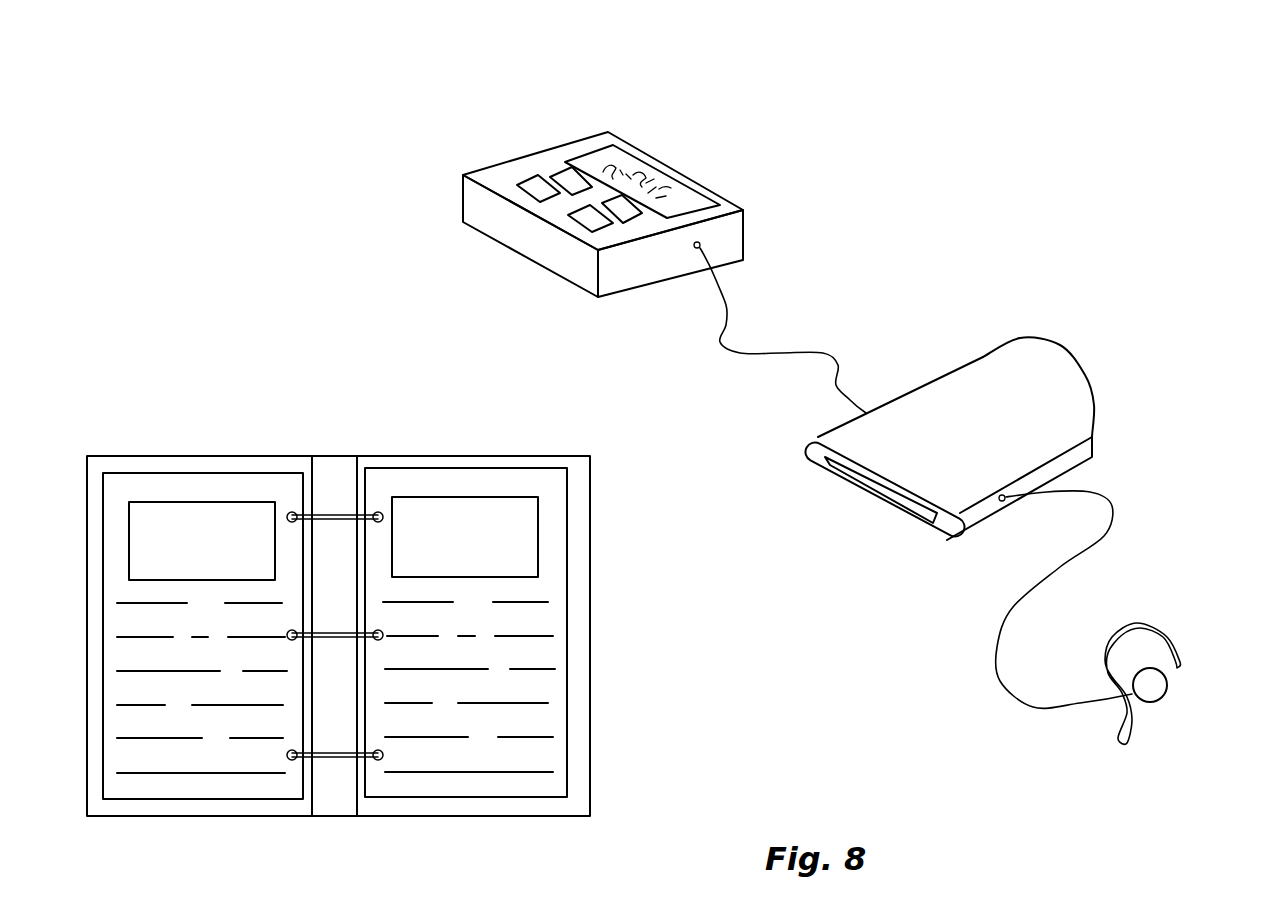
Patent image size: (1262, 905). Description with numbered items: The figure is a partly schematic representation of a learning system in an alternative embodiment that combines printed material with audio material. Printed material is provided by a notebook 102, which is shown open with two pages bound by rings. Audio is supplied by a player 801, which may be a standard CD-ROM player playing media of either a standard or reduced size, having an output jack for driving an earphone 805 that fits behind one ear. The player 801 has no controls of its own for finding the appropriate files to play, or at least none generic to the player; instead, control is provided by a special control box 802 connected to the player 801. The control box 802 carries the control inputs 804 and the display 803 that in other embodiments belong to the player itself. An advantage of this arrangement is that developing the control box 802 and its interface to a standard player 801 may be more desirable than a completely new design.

The notebook 102 is at (152, 440).
The player 801 is at (993, 367).
The control box 802 is at (615, 110).
The display 803 is at (670, 192).
The control inputs 804 is at (532, 172).
The earphone 805 is at (1138, 623).